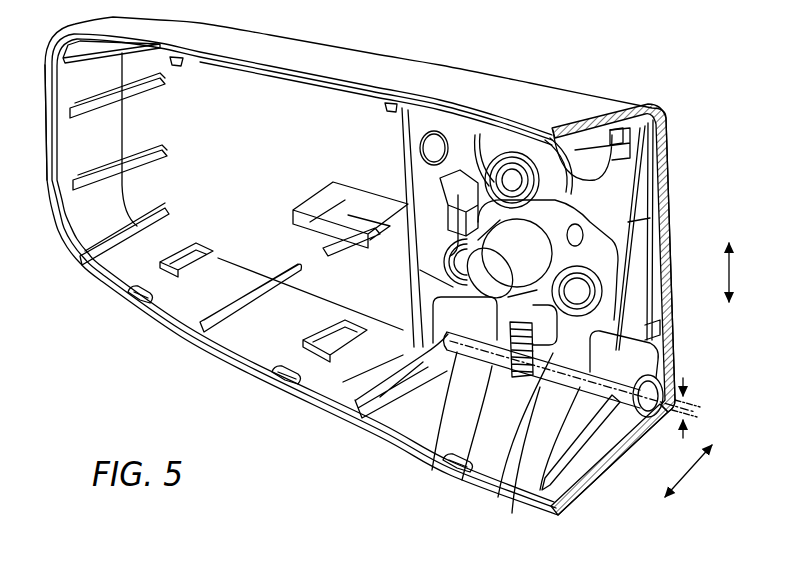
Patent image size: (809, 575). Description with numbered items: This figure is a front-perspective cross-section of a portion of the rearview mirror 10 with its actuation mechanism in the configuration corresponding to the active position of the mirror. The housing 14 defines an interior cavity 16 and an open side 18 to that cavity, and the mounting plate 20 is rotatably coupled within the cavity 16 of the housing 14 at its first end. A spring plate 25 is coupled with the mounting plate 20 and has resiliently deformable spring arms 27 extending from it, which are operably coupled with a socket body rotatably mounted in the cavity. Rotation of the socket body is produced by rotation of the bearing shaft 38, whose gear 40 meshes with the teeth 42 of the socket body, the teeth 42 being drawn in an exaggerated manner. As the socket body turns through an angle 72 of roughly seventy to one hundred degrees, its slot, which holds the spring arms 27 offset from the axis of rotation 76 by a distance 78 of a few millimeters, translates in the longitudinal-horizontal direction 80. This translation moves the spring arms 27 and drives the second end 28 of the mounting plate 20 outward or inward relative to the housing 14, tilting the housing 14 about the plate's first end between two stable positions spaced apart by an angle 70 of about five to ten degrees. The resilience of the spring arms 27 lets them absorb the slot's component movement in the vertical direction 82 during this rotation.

The rearview mirror 10 is at (600, 55).
The housing 14 is at (405, 78).
The interior cavity 16 is at (198, 213).
The open side 18 is at (68, 257).
The mounting plate 20 is at (613, 187).
The spring plate 25 is at (520, 170).
The spring arm 27 is at (618, 127).
The second end 28 is at (652, 348).
The bearing shaft 38 is at (613, 417).
The gear 40 is at (462, 352).
The teeth 42 is at (518, 368).
The angle 70 is at (643, 222).
The angle 72 is at (662, 413).
The axis of rotation 76 is at (512, 505).
The distance 78 is at (690, 386).
The longitudinal-horizontal direction 80 is at (695, 460).
The vertical direction 82 is at (733, 275).